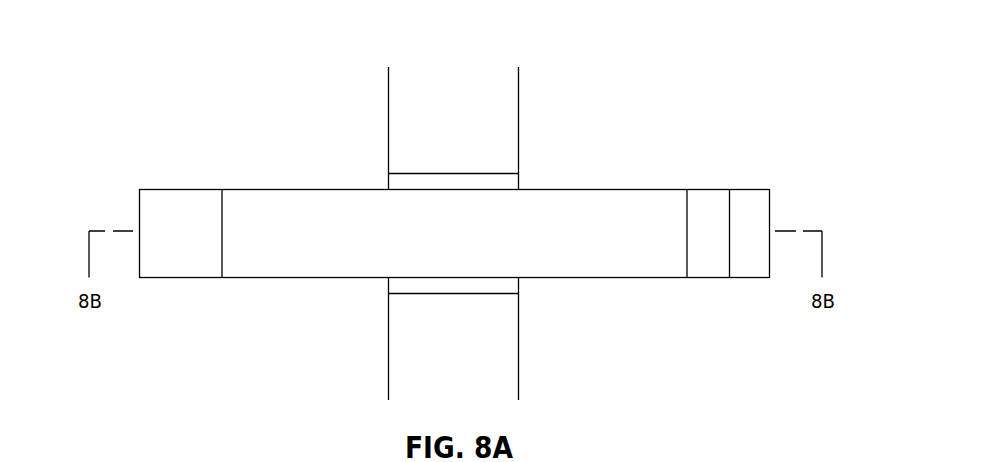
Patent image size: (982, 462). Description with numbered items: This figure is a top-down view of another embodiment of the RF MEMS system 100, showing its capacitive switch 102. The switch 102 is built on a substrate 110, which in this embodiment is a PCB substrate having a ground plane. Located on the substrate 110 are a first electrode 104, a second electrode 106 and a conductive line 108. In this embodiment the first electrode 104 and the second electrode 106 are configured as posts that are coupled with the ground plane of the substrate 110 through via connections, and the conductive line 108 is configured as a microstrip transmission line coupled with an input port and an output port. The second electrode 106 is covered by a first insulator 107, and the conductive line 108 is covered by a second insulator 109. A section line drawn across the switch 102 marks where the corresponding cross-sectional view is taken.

The RF MEMS system 100 is at (730, 81).
The capacitive switch 102 is at (371, 249).
The first electrode 104 is at (189, 249).
The second electrode 106 is at (763, 219).
The first insulator 107 is at (701, 198).
The conductive line 108 is at (470, 356).
The second insulator 109 is at (518, 283).
The substrate 110 is at (258, 342).